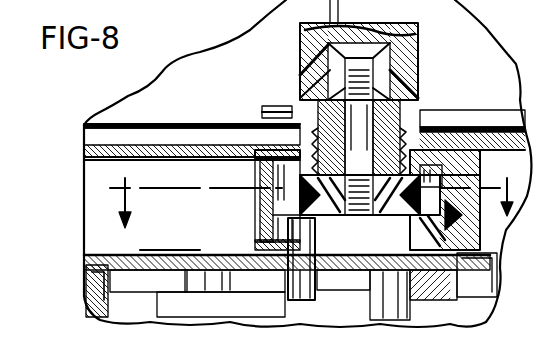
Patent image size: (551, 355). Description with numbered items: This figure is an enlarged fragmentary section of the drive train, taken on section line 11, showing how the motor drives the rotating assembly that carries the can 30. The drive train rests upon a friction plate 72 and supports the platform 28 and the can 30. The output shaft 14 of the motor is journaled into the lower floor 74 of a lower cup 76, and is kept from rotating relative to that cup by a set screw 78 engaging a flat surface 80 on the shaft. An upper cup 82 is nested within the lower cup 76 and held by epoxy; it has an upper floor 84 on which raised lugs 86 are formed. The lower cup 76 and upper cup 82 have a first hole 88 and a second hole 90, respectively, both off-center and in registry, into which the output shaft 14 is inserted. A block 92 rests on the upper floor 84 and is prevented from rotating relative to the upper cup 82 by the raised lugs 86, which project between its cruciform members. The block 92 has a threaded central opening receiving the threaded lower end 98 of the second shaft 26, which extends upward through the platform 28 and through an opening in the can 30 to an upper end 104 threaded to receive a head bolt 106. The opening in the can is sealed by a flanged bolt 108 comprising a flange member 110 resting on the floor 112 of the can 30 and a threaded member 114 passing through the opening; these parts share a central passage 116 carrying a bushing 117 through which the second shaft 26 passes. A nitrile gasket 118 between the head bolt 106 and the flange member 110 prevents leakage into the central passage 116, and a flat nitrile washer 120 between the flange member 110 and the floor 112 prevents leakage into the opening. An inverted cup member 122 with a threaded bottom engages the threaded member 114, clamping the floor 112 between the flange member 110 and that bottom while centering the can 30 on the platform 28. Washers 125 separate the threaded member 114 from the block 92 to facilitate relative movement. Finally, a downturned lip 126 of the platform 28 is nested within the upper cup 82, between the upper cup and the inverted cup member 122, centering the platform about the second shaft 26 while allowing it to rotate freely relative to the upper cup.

The section line 11 is at (315, 190).
The output shaft 14 is at (295, 285).
The second shaft 26 is at (359, 136).
The platform 28 is at (183, 150).
The can 30 is at (122, 114).
The friction plate 72 is at (190, 233).
The lower floor 74 is at (455, 279).
The lower cup 76 is at (460, 222).
The set screw 78 is at (252, 240).
The flat surface 80 is at (272, 276).
The upper cup 82 is at (510, 150).
The upper floor 84 is at (462, 201).
The raised lugs 86 is at (432, 236).
The first hole 88 is at (302, 258).
The second hole 90 is at (262, 216).
The block 92 is at (372, 228).
The threaded lower end 98 is at (352, 206).
The upper end 104 is at (412, 70).
The head bolt 106 is at (370, 30).
The flanged bolt 108 is at (402, 110).
The flange member 110 is at (500, 104).
The floor 112 is at (168, 124).
The threaded member 114 is at (442, 166).
The central passage 116 is at (318, 125).
The bushing 117 is at (322, 86).
The nitrile gasket 118 is at (312, 66).
The flat nitrile washer 120 is at (255, 125).
The inverted cup member 122 is at (282, 128).
The washers 125 is at (276, 160).
The downturned lip 126 is at (436, 174).